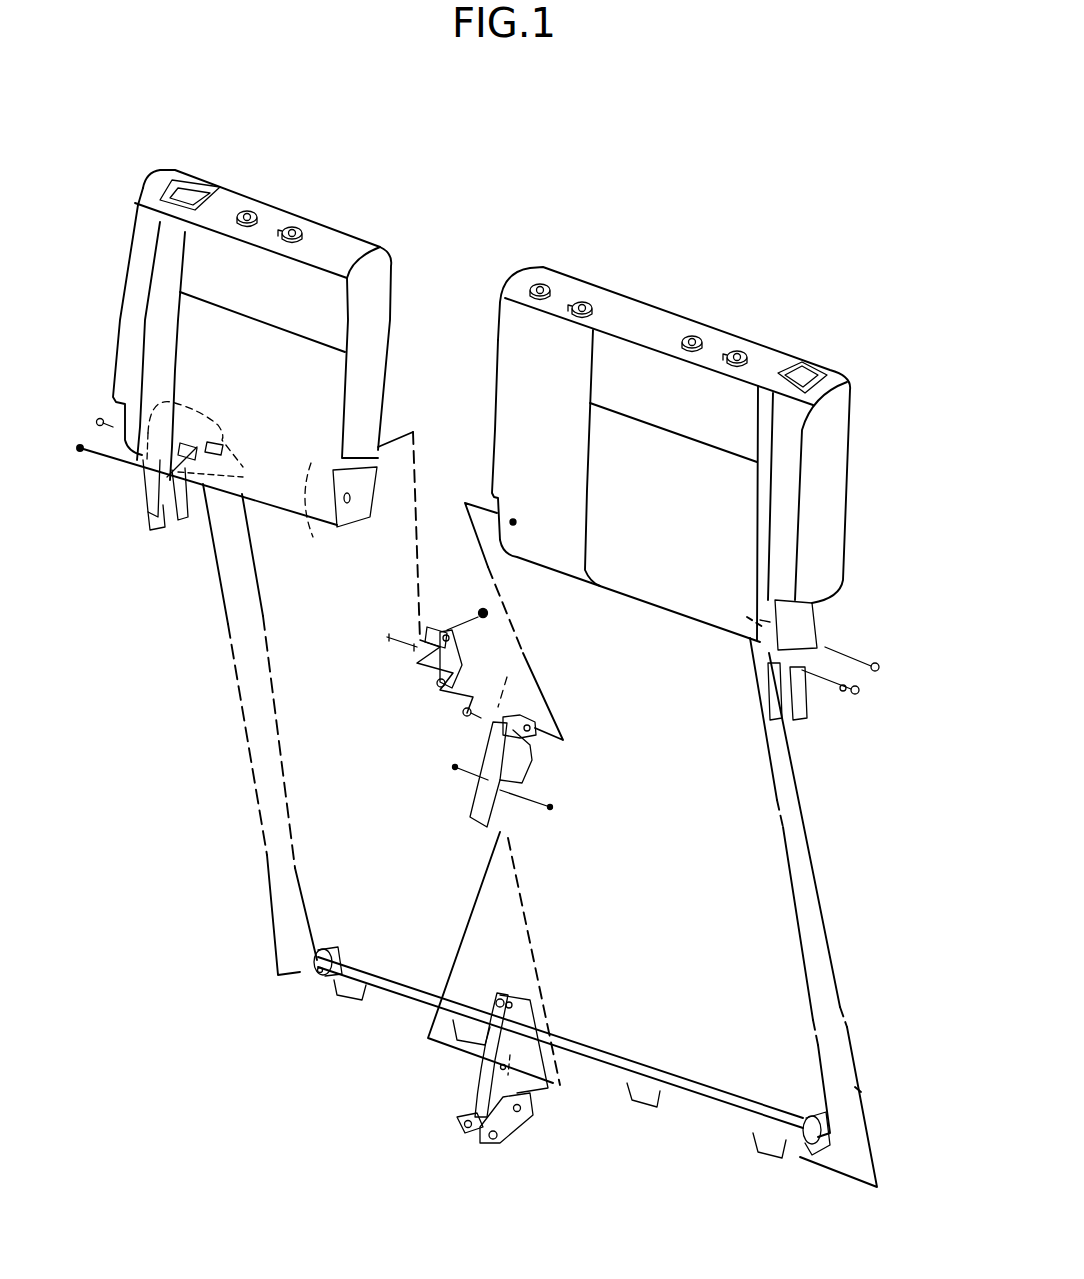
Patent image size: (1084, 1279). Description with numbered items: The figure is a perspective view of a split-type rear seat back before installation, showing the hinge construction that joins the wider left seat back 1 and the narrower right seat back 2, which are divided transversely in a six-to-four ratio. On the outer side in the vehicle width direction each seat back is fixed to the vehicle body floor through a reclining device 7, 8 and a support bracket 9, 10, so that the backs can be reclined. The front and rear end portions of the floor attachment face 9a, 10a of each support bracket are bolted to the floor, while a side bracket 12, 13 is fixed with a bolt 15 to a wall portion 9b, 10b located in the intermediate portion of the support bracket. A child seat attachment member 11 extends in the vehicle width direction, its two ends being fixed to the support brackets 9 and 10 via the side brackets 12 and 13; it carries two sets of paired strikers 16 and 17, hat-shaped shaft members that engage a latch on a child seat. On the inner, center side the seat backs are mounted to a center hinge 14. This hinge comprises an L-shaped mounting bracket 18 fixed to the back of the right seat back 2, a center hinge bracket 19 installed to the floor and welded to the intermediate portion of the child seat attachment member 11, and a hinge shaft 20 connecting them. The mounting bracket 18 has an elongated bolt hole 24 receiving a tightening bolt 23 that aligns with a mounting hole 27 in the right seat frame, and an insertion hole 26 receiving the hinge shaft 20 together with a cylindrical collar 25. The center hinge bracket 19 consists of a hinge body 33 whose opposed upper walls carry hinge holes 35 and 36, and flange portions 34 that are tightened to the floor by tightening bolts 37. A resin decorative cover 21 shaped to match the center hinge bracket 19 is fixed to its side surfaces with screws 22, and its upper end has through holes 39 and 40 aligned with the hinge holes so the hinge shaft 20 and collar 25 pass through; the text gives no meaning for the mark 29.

The left seat back 1 is at (666, 312).
The right seat back 2 is at (316, 219).
The reclining device 7 is at (827, 610).
The reclining device 8 is at (148, 487).
The support bracket 9 is at (796, 708).
The floor attachment face 9a is at (787, 722).
The wall portion 9b is at (848, 697).
The support bracket 10 is at (178, 510).
The floor attachment face 10a is at (161, 535).
The wall portion 10b is at (145, 468).
The child seat attachment member 11 is at (393, 980).
The side bracket 12 is at (808, 1122).
The side bracket 13 is at (328, 950).
The center hinge 14 is at (550, 1008).
The bolt 15 is at (100, 419).
The striker 16 is at (450, 1040).
The striker 17 is at (345, 997).
The mounting bracket 18 is at (460, 644).
The center hinge bracket 19 is at (480, 1083).
The hinge shaft 20 is at (395, 648).
The decorative cover 21 is at (515, 772).
The screw 22 is at (453, 769).
The tightening bolt 23 is at (482, 608).
The bolt hole 24 is at (432, 627).
The cylindrical collar 25 is at (463, 714).
The insertion hole 26 is at (438, 687).
The mounting hole 27 is at (311, 522).
The pin 29 is at (513, 520).
The hinge body 33 is at (520, 1068).
The flange portion 34 is at (457, 1112).
The hinge hole 35 is at (538, 1003).
The hinge hole 36 is at (497, 999).
The tightening bolt 37 is at (492, 1143).
The through hole 39 is at (520, 718).
The through hole 40 is at (510, 681).